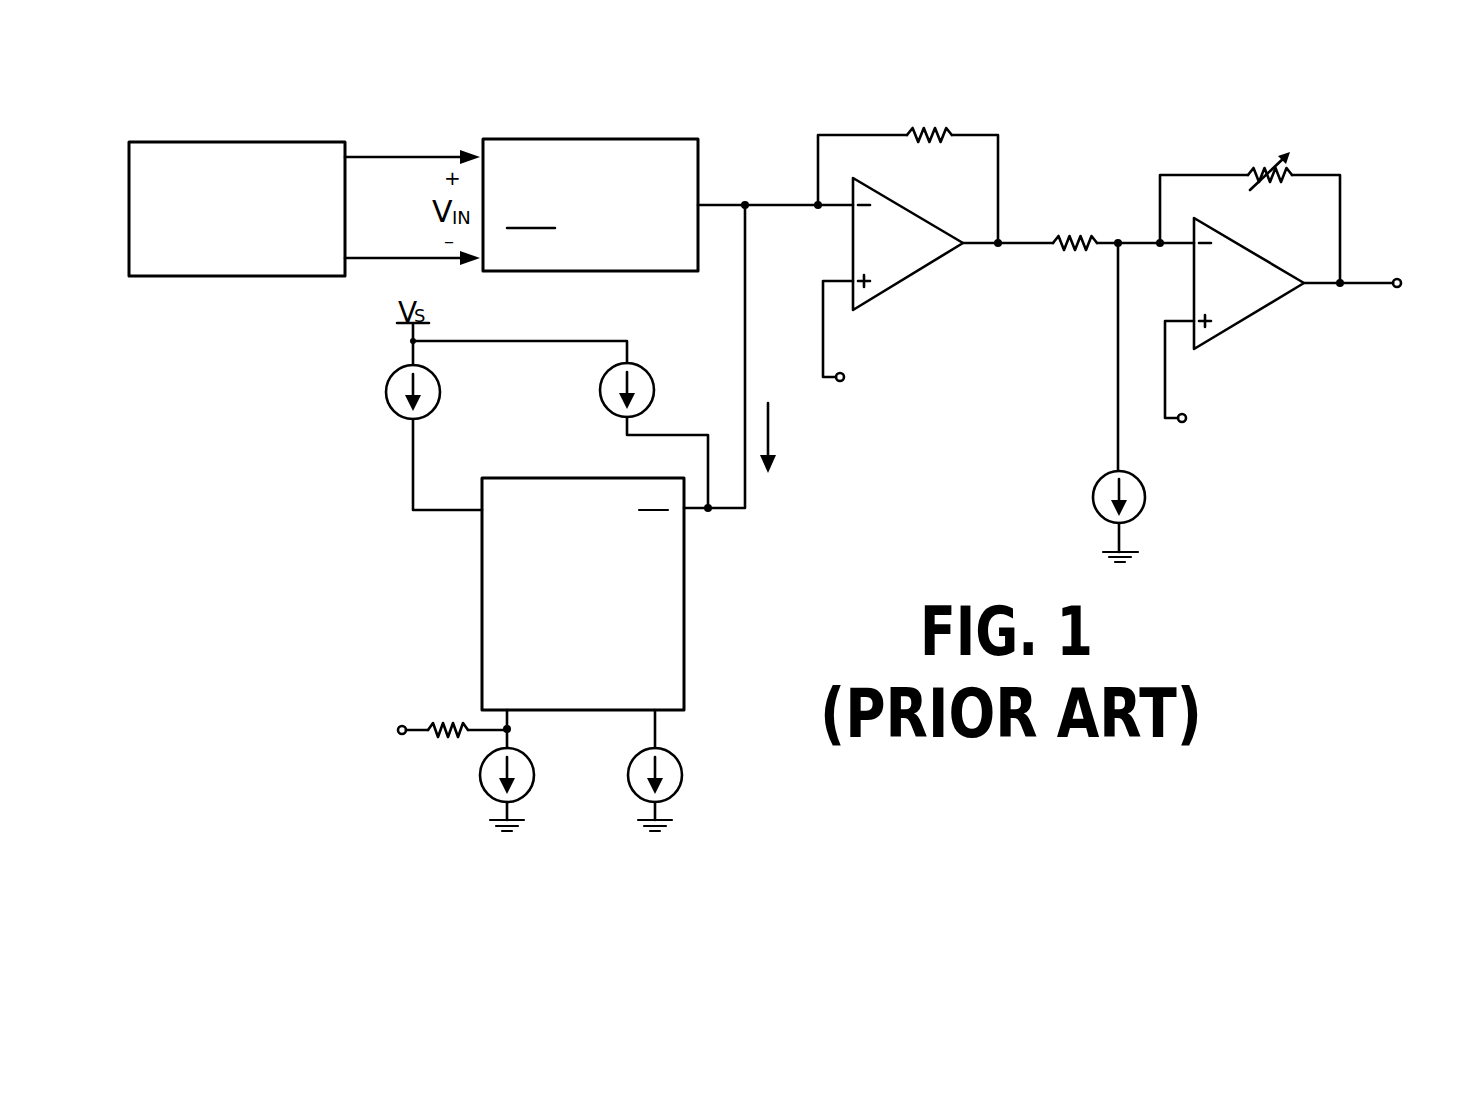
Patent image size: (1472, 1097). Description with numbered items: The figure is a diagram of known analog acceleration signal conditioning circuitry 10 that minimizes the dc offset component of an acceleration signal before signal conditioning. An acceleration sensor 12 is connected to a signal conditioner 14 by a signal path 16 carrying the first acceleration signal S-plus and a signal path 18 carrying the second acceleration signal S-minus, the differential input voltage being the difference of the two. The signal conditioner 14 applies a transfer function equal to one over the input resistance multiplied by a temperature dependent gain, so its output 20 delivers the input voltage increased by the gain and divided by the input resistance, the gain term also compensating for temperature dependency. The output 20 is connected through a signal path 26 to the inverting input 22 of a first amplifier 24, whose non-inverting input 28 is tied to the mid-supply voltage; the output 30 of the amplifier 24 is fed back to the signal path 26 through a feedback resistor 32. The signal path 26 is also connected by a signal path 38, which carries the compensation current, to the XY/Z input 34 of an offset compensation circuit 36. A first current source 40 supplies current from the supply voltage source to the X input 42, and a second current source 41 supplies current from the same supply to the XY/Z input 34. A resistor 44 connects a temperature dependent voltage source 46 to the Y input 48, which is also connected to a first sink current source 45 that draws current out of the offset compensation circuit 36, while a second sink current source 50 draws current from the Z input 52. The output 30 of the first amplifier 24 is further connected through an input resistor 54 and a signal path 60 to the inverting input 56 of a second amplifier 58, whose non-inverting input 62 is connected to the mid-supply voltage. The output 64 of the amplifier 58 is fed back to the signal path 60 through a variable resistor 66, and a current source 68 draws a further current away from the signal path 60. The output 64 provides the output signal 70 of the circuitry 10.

The analog acceleration signal conditioning circuitry 10 is at (978, 410).
The acceleration sensor 12 is at (208, 142).
The signal conditioner 14 is at (628, 138).
The signal path 16 is at (387, 157).
The signal path 18 is at (383, 260).
The output of signal conditioner 20 is at (703, 204).
The inverting input of first amplifier 22 is at (848, 196).
The first amplifier 24 is at (920, 217).
The signal path 26 is at (765, 205).
The non-inverting input of first amplifier 28 is at (847, 280).
The output of first amplifier 30 is at (965, 248).
The resistor R2 32 is at (950, 128).
The XY/Z input of offset compensation circuit 34 is at (693, 515).
The offset compensation circuit 36 is at (575, 478).
The signal path 38 is at (747, 353).
The first current source ID 40 is at (386, 392).
The second current source ID 41 is at (600, 390).
The X input of offset compensation circuit 42 is at (478, 515).
The resistor R1 44 is at (440, 740).
The first current source IE 45 is at (481, 782).
The temperature dependent voltage source V(T) 46 is at (402, 738).
The Y input of offset compensation circuit 48 is at (512, 718).
The second current source IE 50 is at (679, 790).
The Z input of offset compensation circuit 52 is at (660, 712).
The resistor R2 54 is at (1074, 250).
The inverting input of second amplifier 56 is at (1192, 236).
The second amplifier 58 is at (1250, 252).
The signal path 60 is at (1133, 243).
The non-inverting input of second amplifier 62 is at (1192, 321).
The output of second amplifier 64 is at (1306, 288).
The variable resistor R3 66 is at (1292, 172).
The current source 68 is at (1147, 493).
The output signal VOUT 70 is at (1397, 290).